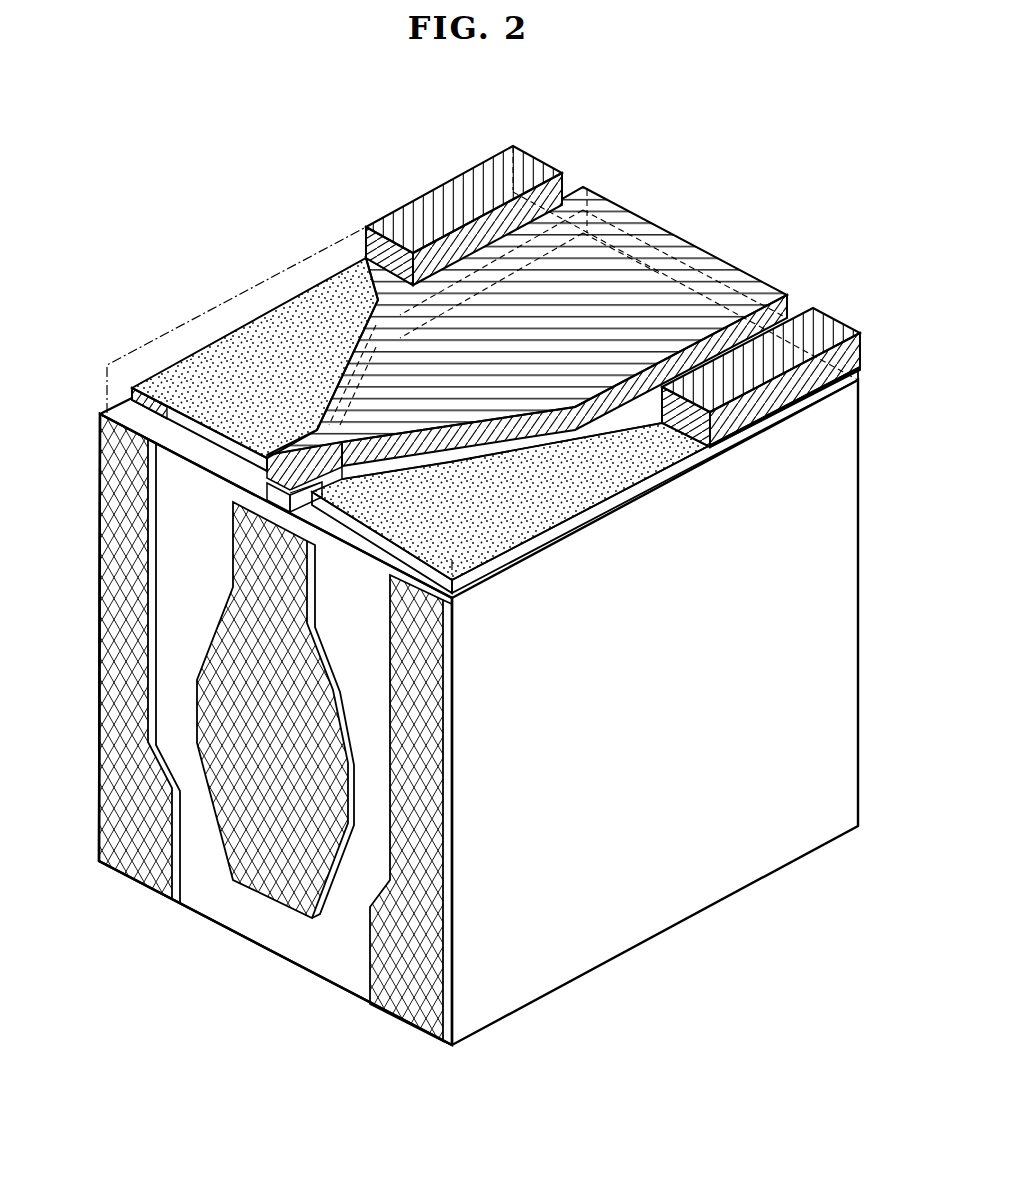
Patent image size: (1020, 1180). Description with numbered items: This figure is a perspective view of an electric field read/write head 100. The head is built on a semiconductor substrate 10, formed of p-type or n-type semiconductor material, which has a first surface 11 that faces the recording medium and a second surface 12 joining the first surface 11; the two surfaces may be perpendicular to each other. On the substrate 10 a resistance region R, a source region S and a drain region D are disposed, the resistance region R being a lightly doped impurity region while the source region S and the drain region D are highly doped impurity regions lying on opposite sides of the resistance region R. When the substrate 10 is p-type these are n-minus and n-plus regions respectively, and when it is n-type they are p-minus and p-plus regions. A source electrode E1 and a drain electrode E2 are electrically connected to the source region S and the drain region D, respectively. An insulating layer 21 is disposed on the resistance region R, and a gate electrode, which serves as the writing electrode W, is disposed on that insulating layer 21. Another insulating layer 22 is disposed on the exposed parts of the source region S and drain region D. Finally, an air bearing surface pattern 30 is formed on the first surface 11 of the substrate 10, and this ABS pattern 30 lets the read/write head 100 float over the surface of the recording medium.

The electric field read/write head 100 is at (467, 572).
The semiconductor substrate 10 is at (698, 867).
The first surface 11 is at (185, 592).
The second surface 12 is at (182, 438).
The insulating layer 21 is at (268, 484).
The insulating layer 22 is at (328, 262).
The air bearing surface pattern 30 is at (395, 953).
The source region S is at (290, 318).
The drain region D is at (658, 485).
The writing electrode W is at (672, 250).
The source electrode E1 is at (532, 172).
The drain electrode E2 is at (829, 345).
The resistance region R is at (294, 500).